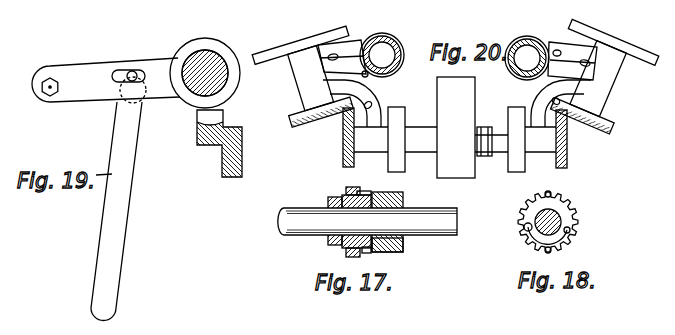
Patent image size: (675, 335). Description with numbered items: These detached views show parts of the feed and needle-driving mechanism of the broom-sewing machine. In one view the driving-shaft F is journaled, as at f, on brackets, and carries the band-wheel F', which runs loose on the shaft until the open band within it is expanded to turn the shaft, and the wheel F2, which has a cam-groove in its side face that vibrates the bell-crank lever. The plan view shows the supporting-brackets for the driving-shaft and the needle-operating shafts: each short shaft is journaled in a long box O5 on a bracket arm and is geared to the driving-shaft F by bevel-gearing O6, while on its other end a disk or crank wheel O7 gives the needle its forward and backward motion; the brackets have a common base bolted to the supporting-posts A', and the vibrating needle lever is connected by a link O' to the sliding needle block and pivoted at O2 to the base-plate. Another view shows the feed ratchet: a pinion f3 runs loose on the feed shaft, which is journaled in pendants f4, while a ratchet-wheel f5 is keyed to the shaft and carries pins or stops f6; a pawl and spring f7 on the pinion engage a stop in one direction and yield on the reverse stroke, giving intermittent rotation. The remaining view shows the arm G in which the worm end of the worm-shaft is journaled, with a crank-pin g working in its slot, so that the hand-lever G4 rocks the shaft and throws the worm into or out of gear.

In FIG. 19, the arm G is at (137, 107).
In FIG. 19, the crank-pin g is at (129, 82).
In FIG. 19, the hand-lever G4 is at (116, 211).
In FIG. 20, the link O' is at (300, 45).
In FIG. 20, the disk or crank wheel O7 is at (613, 42).
In FIG. 20, the long box O5 is at (457, 79).
In FIG. 20, the bevel-gearing O6 is at (451, 132).
In FIG. 20, the supporting-posts A' is at (454, 56).
In FIG. 20, the pivot O2 is at (457, 83).
In FIG. 20, the journal f is at (455, 140).
In FIG. 20, the wheel F2 is at (456, 139).
In FIG. 20, the band-wheel F' is at (456, 127).
In FIG. 20, the driving-shaft F is at (460, 153).
In FIG. 17, the ratchet-wheel f5 is at (349, 215).
In FIG. 17, the pinion f3 is at (398, 194).
In FIG. 18, the pinion f3 is at (571, 213).
In FIG. 17, the pins or stops f6 is at (370, 223).
In FIG. 18, the pins or stops f6 is at (551, 194).
In FIG. 17, the pawl and spring f7 is at (388, 252).
In FIG. 18, the pawl and spring f7 is at (528, 232).
In FIG. 17, the pendants f4 is at (367, 221).
In FIG. 18, the pendants f4 is at (547, 226).